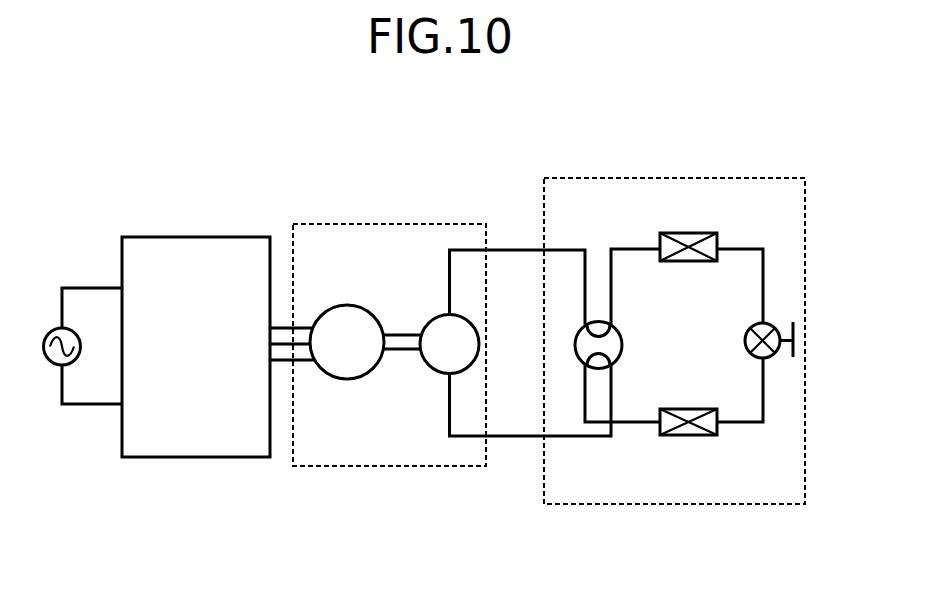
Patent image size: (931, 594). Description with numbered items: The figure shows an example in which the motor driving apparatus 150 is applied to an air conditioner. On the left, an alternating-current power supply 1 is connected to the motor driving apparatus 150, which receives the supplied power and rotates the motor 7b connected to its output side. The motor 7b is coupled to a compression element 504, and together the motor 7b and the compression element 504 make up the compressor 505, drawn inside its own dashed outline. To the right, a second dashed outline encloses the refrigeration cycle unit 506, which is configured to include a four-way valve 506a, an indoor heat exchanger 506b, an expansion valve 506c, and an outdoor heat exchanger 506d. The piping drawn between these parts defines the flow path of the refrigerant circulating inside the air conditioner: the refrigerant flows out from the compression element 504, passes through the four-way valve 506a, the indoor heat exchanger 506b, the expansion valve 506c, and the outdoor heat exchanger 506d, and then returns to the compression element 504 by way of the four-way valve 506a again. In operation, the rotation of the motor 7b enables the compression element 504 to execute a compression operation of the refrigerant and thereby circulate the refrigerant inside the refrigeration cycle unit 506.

The alternating-current power supply 1 is at (52, 330).
The motor driving apparatus 150 is at (222, 237).
The compressor 505 is at (440, 224).
The motor 7b is at (350, 380).
The compression element 504 is at (439, 315).
The refrigeration cycle unit 506 is at (772, 178).
The four-way valve 506a is at (613, 345).
The indoor heat exchanger 506b is at (687, 233).
The expansion valve 506c is at (775, 326).
The outdoor heat exchanger 506d is at (690, 436).